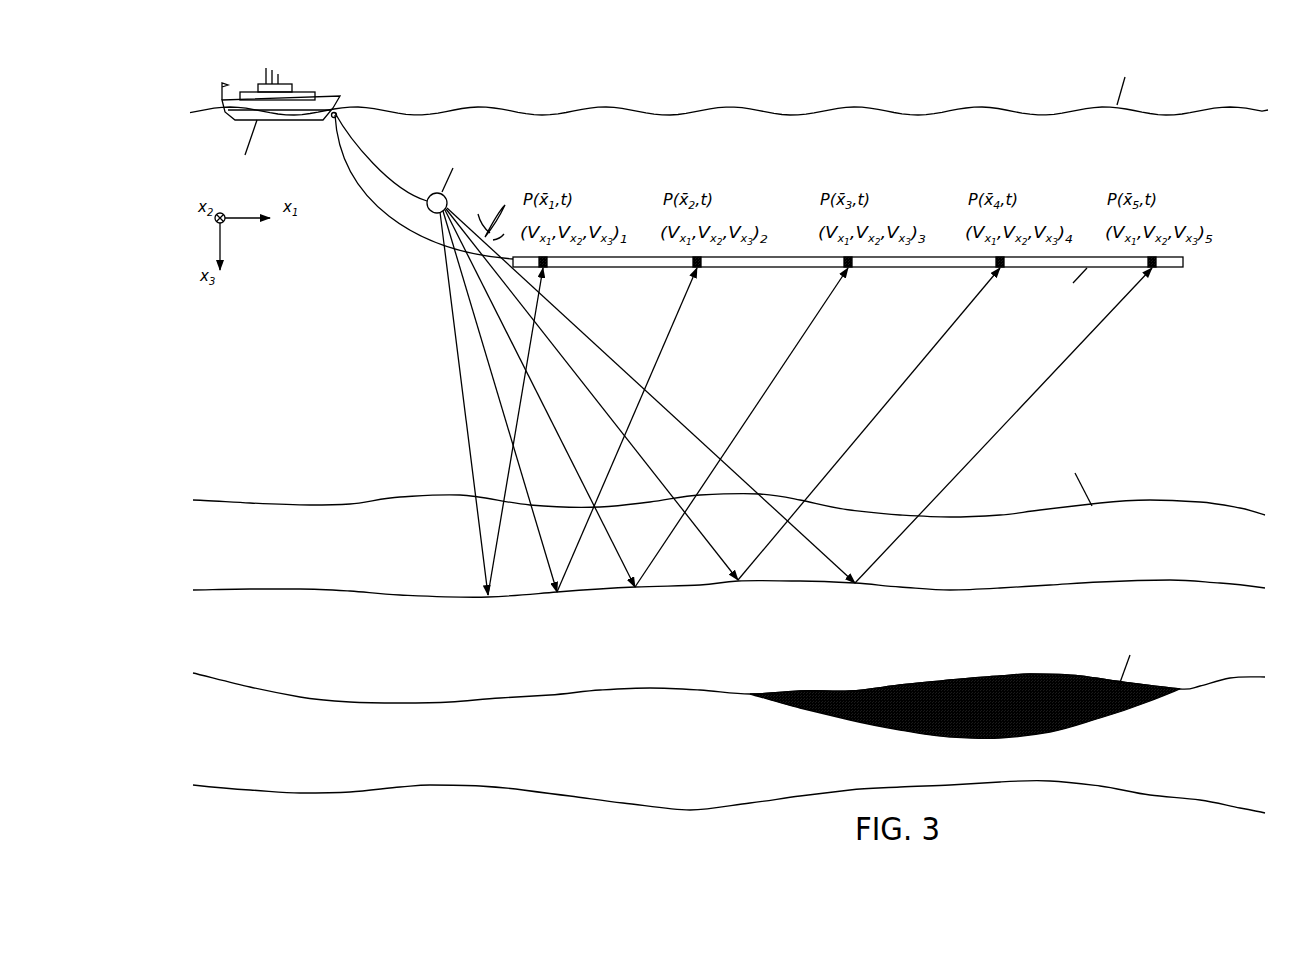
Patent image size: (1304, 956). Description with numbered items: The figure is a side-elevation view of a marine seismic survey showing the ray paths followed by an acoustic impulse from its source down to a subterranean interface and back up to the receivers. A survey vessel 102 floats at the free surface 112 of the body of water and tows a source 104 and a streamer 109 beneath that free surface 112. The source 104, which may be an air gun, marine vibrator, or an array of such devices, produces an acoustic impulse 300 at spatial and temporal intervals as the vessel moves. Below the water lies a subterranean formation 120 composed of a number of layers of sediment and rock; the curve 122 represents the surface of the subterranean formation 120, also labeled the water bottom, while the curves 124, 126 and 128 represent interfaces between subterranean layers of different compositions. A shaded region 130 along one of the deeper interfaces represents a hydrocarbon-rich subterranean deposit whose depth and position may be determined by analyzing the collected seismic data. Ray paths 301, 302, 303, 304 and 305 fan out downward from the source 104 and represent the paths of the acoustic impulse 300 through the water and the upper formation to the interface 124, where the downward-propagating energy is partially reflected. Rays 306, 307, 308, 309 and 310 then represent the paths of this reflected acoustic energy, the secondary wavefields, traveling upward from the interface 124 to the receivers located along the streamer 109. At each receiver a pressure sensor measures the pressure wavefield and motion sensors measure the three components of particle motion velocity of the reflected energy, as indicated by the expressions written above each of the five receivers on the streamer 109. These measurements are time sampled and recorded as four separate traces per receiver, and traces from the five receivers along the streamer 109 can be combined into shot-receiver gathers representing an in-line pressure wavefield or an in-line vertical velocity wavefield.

The survey vessel 102 is at (300, 88).
The source 104 is at (430, 193).
The streamer 109 is at (912, 262).
The free surface 112 is at (870, 106).
The subterranean formation 120 is at (283, 455).
The surface of the subterranean formation 122 is at (350, 503).
The interface 124 is at (350, 590).
The interface 126 is at (337, 702).
The interface 128 is at (337, 792).
The hydrocarbon-rich subterranean deposit 130 is at (962, 694).
The acoustic impulse 300 is at (497, 198).
The ray path 301 is at (475, 520).
The ray path 302 is at (540, 538).
The ray path 303 is at (610, 542).
The ray path 304 is at (708, 543).
The ray path 305 is at (808, 542).
The ray 306 is at (548, 272).
The ray 307 is at (680, 312).
The ray 308 is at (822, 326).
The ray 309 is at (948, 341).
The ray 310 is at (1085, 341).